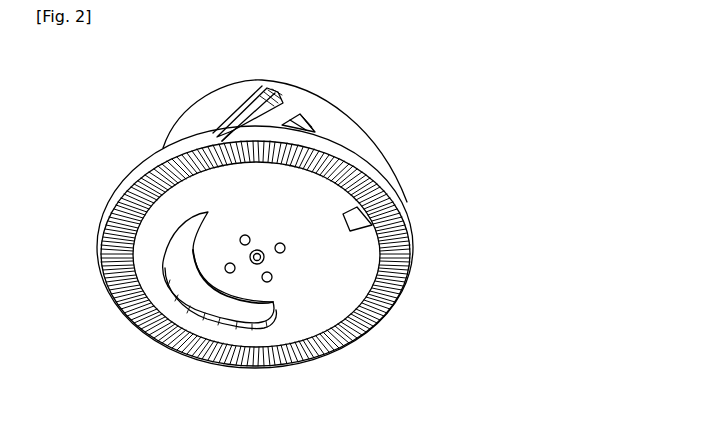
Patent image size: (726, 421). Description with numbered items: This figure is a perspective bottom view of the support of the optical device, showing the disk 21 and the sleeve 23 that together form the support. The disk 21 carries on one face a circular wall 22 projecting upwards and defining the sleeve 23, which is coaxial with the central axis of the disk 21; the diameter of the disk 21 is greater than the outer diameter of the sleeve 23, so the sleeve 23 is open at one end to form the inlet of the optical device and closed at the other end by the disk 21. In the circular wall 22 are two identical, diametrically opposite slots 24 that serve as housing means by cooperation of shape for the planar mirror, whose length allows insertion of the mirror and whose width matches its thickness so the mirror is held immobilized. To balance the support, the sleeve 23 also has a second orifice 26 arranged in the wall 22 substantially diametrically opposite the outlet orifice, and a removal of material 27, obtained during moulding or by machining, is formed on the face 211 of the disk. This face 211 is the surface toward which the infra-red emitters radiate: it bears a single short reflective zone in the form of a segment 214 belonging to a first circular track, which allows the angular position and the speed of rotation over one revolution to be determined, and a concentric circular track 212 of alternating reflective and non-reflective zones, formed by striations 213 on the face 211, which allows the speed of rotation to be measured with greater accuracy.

The disk 21 is at (403, 198).
The face of the disk 211 is at (360, 267).
The circular track 212 is at (108, 248).
The striations 213 is at (102, 282).
The segment 214 is at (408, 217).
The circular wall 22 is at (293, 107).
The sleeve 23 is at (189, 119).
The slots 24 is at (243, 104).
The second orifice 26 is at (304, 124).
The removal of material 27 is at (190, 288).